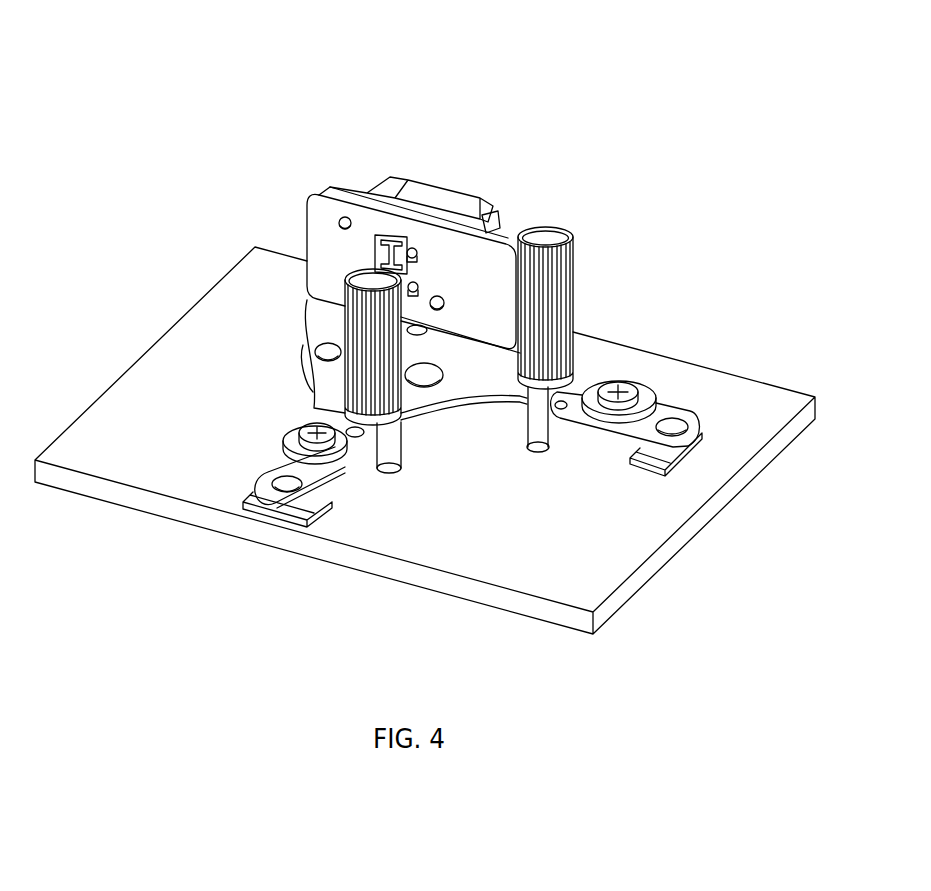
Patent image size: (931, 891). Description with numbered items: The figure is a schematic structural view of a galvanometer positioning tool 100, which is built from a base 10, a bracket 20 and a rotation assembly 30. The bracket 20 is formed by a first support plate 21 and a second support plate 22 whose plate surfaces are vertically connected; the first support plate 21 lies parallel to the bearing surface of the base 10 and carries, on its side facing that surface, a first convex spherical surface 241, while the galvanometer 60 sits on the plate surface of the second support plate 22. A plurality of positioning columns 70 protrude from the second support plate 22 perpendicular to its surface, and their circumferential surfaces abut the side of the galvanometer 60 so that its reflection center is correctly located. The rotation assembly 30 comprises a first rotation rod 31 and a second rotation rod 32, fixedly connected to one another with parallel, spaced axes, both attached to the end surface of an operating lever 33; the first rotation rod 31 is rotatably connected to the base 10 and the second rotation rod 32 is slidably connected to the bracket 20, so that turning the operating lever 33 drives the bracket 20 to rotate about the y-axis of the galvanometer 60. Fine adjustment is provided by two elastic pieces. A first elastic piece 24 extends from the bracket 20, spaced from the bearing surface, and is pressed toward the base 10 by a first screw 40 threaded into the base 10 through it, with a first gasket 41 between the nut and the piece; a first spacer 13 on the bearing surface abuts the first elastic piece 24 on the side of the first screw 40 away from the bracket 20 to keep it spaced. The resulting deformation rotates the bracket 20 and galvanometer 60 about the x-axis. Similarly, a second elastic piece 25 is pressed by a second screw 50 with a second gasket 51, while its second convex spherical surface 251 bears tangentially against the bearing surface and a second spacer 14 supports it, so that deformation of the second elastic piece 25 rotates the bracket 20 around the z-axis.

The galvanometer positioning tool 100 is at (103, 55).
The base 10 is at (90, 453).
The first spacer 13 is at (305, 510).
The second spacer 14 is at (660, 455).
The bracket 20 is at (134, 260).
The first support plate 21 is at (333, 323).
The second support plate 22 is at (318, 265).
The first elastic piece 24 is at (208, 445).
The first convex spherical surface 241 is at (273, 486).
The second elastic piece 25 is at (669, 374).
The second convex spherical surface 251 is at (668, 428).
The rotation assembly 30 is at (402, 635).
The first rotation rod 31 is at (388, 462).
The second rotation rod 32 is at (352, 437).
The operating lever 33 is at (365, 416).
The first screw 40 is at (305, 437).
The first gasket 41 is at (285, 452).
The second screw 50 is at (627, 398).
The second gasket 51 is at (617, 413).
The galvanometer 60 is at (378, 243).
The positioning column 70 is at (417, 250).